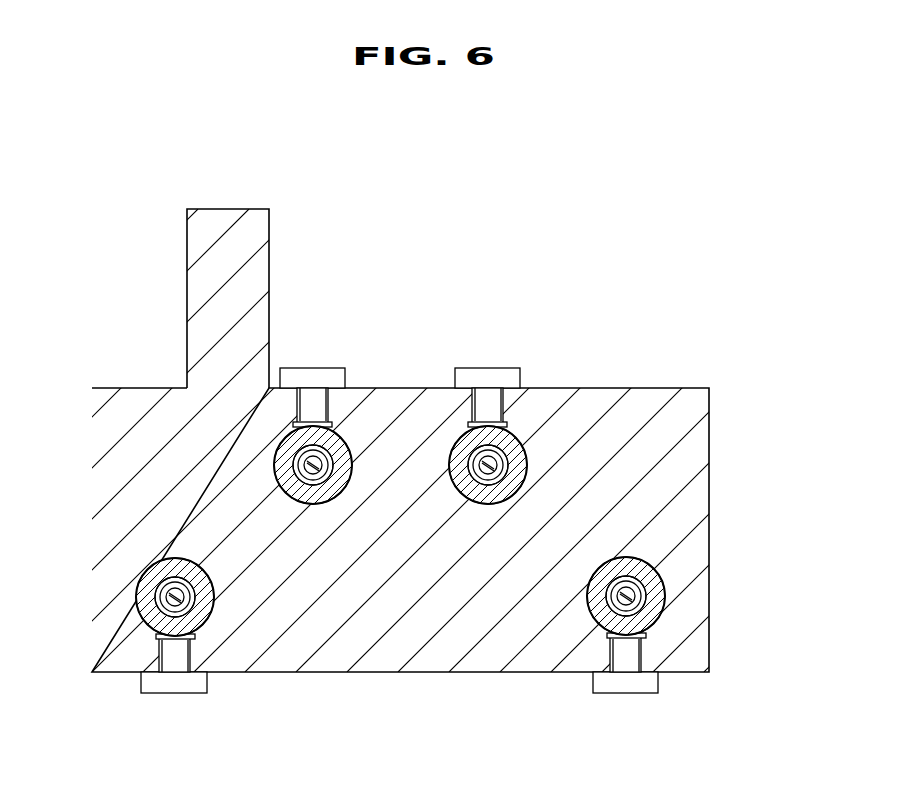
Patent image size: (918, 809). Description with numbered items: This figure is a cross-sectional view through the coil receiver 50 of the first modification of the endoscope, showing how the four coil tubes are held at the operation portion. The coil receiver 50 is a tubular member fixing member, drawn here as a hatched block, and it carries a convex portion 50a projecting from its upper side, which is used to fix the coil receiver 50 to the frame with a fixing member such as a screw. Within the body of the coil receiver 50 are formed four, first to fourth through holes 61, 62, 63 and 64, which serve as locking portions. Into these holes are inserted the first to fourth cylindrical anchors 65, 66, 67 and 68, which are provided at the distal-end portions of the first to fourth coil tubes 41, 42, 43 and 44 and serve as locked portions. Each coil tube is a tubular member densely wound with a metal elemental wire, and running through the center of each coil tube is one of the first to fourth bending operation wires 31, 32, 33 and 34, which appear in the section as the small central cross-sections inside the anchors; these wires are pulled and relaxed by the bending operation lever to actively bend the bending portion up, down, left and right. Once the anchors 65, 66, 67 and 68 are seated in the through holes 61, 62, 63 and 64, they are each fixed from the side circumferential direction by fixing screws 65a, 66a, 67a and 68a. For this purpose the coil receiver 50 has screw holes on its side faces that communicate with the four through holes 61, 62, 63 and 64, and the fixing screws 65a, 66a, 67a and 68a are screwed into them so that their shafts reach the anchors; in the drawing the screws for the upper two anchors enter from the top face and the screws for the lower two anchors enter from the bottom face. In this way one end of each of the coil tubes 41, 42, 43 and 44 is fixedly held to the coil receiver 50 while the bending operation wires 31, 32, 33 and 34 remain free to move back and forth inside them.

The coil receiver 50 is at (709, 424).
The convex portion 50a is at (187, 278).
The first bending operation wire 31 is at (163, 595).
The second bending operation wire 32 is at (312, 458).
The third bending operation wire 33 is at (487, 458).
The fourth bending operation wire 34 is at (638, 595).
The first coil tube 41 is at (152, 587).
The second coil tube 42 is at (318, 442).
The third coil tube 43 is at (493, 442).
The fourth coil tube 44 is at (648, 583).
The first through hole 61 is at (145, 568).
The second through hole 62 is at (348, 445).
The third through hole 63 is at (523, 445).
The fourth through hole 64 is at (650, 568).
The first cylindrical anchor 65 is at (140, 615).
The second cylindrical anchor 66 is at (333, 430).
The third cylindrical anchor 67 is at (508, 430).
The fourth cylindrical anchor 68 is at (660, 613).
The fixing screw 65a is at (175, 695).
The fixing screw 66a is at (300, 373).
The fixing screw 67a is at (475, 373).
The fixing screw 68a is at (627, 693).